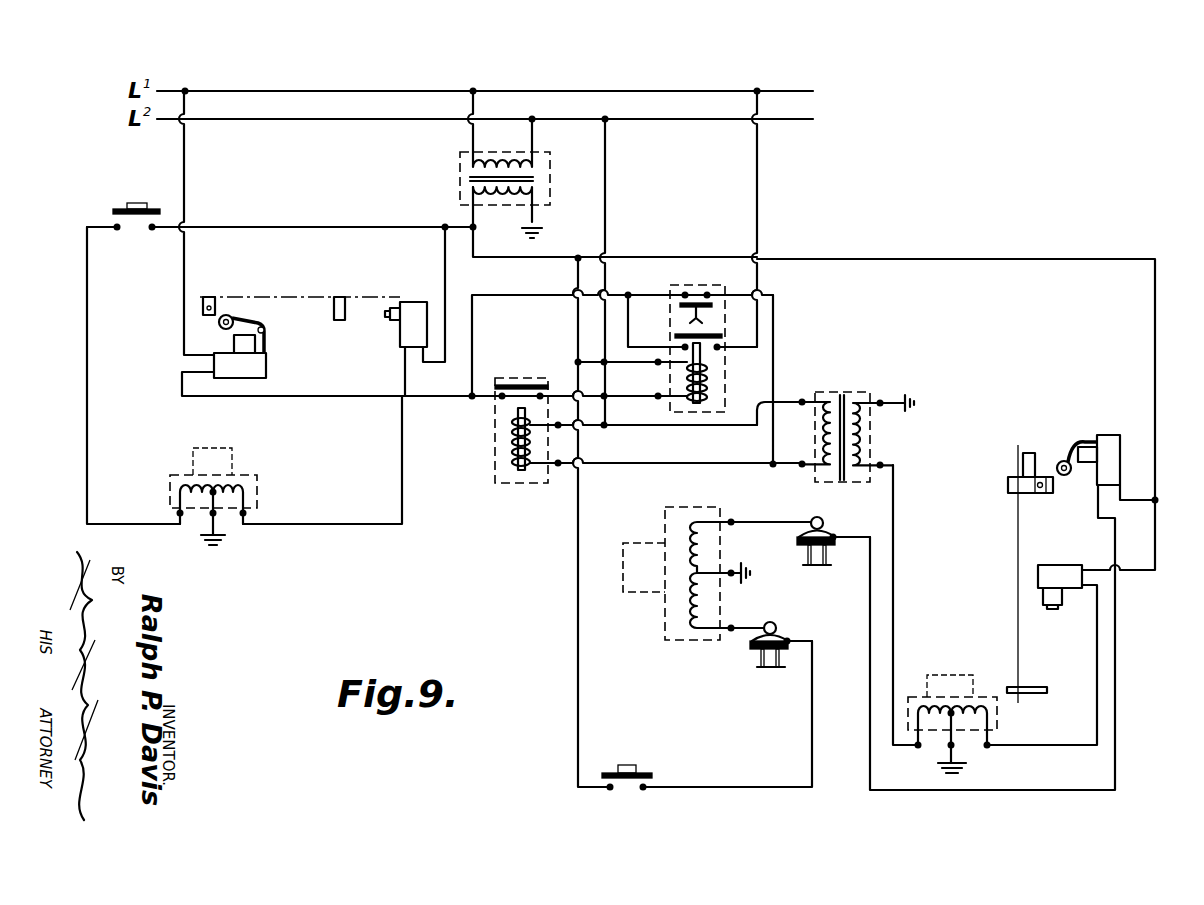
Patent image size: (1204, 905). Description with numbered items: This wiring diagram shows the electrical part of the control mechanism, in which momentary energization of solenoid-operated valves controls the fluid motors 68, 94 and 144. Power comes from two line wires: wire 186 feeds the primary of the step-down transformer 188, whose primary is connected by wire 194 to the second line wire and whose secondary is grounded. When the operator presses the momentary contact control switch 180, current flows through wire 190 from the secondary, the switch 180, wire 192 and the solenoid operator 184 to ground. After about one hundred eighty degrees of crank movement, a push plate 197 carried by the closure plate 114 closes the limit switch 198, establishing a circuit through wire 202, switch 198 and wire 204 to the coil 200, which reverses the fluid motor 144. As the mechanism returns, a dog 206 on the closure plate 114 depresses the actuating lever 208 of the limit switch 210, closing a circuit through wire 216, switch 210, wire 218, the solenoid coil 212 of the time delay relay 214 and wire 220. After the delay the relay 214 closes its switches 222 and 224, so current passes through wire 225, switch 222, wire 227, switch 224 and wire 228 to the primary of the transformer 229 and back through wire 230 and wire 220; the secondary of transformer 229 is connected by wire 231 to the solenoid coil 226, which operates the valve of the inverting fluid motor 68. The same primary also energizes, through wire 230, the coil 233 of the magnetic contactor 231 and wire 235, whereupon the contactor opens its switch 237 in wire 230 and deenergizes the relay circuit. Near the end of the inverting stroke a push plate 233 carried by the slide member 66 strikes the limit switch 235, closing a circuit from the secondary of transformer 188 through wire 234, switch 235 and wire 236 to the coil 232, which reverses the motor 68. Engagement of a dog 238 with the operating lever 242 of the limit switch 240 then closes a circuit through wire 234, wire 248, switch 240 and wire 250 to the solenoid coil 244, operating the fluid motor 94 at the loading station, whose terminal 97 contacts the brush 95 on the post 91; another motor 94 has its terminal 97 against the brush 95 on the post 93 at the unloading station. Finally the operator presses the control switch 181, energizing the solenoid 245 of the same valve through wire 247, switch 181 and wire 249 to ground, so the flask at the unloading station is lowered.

The slide member 66 is at (1018, 592).
The fluid motor 68 is at (945, 696).
The post 91 is at (829, 565).
The post 93 is at (753, 658).
The fluid motor 94 is at (643, 542).
The brush 95 is at (800, 536).
The terminal 97 is at (825, 518).
The closure plate 114 is at (266, 297).
The fluid motor 144 is at (233, 462).
The control switch 180 is at (115, 205).
The control switch 181 is at (636, 773).
The solenoid operator 184 is at (188, 475).
The wire 186 is at (470, 143).
The step-down transformer 188 is at (460, 178).
The wire 190 is at (367, 227).
The wire 192 is at (87, 357).
The wire 194 is at (533, 143).
The push plate 197 is at (338, 297).
The limit switch 198 is at (404, 302).
The coil 200 is at (245, 476).
The wire 202 is at (446, 275).
The wire 204 is at (402, 460).
The dog 206 is at (209, 297).
The actuating lever 208 is at (252, 320).
The limit switch 210 is at (266, 360).
The solenoid coil 212 is at (708, 383).
The time delay relay 214 is at (745, 365).
The wire 216 is at (185, 183).
The wire 218 is at (320, 396).
The wire 220 is at (608, 200).
The switch 222 is at (723, 346).
The switch 224 is at (695, 293).
The wire 225 is at (760, 200).
The solenoid coil 226 is at (918, 697).
The wire 227 is at (656, 321).
The wire 228 is at (774, 376).
The transformer 229 is at (850, 392).
The wire 230 is at (714, 432).
The magnetic contactor 231 is at (506, 480).
The coil 232 is at (972, 697).
The contactor coil 233 is at (512, 437).
The wire 234 is at (890, 263).
The limit switch 235 is at (628, 468).
The wire 236 is at (1042, 748).
The switch 237 is at (517, 384).
The dog 238 is at (1008, 485).
The limit switch 240 is at (1107, 435).
The operating lever 242 is at (1062, 460).
The solenoid coil 244 is at (670, 508).
The solenoid 245 is at (665, 610).
The wire 247 is at (575, 560).
The wire 248 is at (1120, 508).
The wire 249 is at (757, 787).
The wire 250 is at (869, 597).